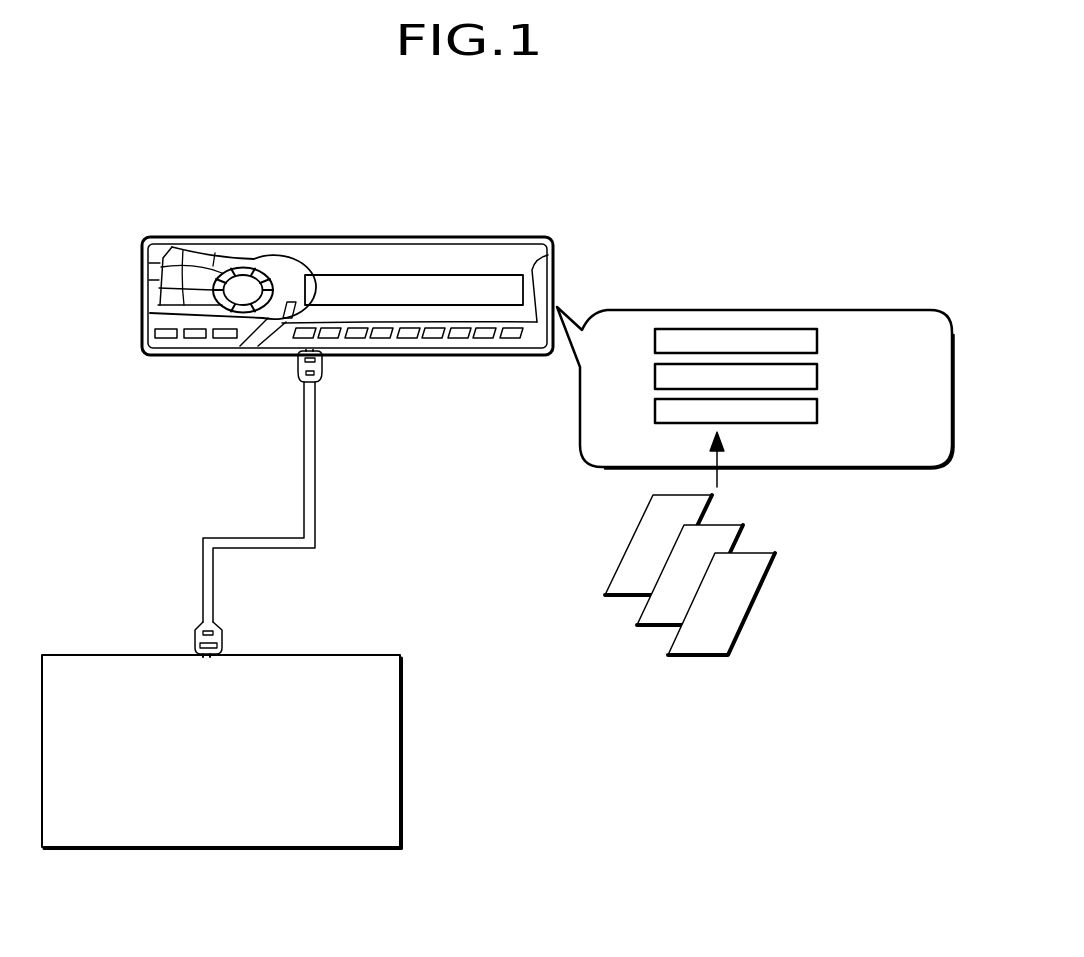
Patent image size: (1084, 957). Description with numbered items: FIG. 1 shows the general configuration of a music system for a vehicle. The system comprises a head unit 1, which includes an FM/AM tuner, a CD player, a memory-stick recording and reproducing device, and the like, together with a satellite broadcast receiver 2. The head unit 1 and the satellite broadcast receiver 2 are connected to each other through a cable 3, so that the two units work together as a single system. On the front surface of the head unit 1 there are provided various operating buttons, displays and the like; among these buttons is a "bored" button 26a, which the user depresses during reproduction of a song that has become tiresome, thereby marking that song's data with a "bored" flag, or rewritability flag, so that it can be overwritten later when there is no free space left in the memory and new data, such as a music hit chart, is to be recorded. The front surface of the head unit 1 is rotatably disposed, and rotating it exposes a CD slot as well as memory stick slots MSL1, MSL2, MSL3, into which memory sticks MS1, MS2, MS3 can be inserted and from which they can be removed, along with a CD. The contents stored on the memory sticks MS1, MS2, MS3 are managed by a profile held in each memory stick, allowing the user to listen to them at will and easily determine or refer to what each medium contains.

The head unit 1 is at (311, 269).
The "bored" button 26a is at (170, 292).
The cable 3 is at (317, 463).
The satellite broadcast receiver 2 is at (102, 835).
The memory stick slot MSL1 is at (817, 340).
The memory stick slot MSL2 is at (817, 377).
The memory stick slot MSL3 is at (817, 412).
The memory stick MS1 is at (610, 575).
The memory stick MS2 is at (635, 612).
The memory stick MS3 is at (670, 639).